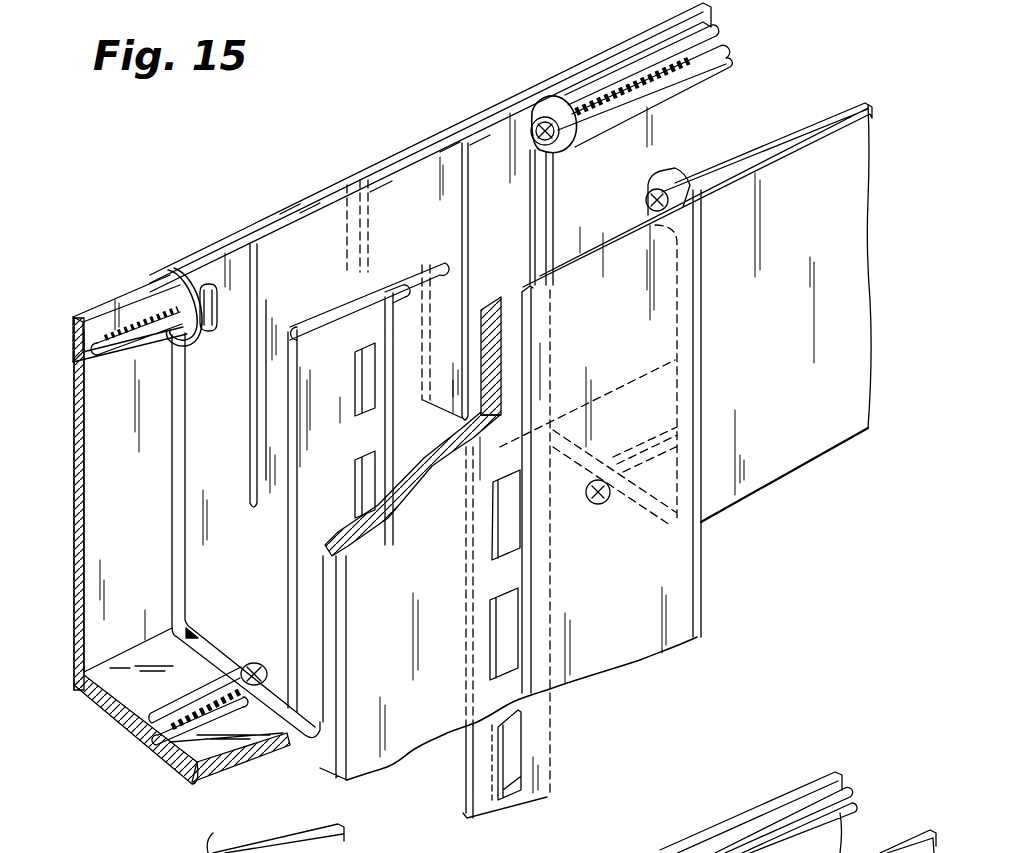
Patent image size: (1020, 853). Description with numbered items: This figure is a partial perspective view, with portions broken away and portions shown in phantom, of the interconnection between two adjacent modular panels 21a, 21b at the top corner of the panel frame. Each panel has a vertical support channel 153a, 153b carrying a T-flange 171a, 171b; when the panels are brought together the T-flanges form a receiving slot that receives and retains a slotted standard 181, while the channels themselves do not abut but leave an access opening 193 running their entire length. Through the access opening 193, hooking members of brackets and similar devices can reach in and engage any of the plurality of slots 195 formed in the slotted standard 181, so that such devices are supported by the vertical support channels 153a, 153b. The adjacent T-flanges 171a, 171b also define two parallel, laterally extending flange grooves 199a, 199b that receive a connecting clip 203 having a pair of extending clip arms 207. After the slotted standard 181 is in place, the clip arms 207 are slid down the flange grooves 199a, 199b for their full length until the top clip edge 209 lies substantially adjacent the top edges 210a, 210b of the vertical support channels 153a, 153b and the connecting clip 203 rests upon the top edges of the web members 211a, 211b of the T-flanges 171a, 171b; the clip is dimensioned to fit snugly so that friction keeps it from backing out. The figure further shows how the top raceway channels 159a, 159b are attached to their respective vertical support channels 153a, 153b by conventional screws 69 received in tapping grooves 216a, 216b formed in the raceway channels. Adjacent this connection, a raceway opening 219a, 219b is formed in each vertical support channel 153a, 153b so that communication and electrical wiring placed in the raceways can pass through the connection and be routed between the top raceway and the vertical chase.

The modular panel 21a is at (97, 264).
The modular panel 21b is at (573, 44).
The screw 69 is at (180, 337).
The vertical support channel 153a is at (210, 268).
The vertical support channel 153b is at (493, 133).
The top raceway channel 159a is at (80, 560).
The top raceway channel 159b is at (850, 252).
The T-flange 171a is at (305, 518).
The T-flange 171b is at (458, 277).
The slotted standard 181 is at (367, 325).
The access opening 193 is at (350, 175).
The slot 195 is at (365, 540).
The flange groove 199a is at (275, 337).
The flange groove 199b is at (435, 262).
The connecting clip 203 is at (278, 250).
The clip arm 207 is at (268, 418).
The top clip edge 209 is at (383, 173).
The top edge 210a is at (293, 205).
The top edge 210b is at (460, 130).
The web member 211a is at (305, 327).
The web member 211b is at (400, 277).
The tapping groove 216a is at (95, 360).
The tapping groove 216b is at (728, 44).
The raceway opening 219a is at (182, 563).
The raceway opening 219b is at (553, 185).